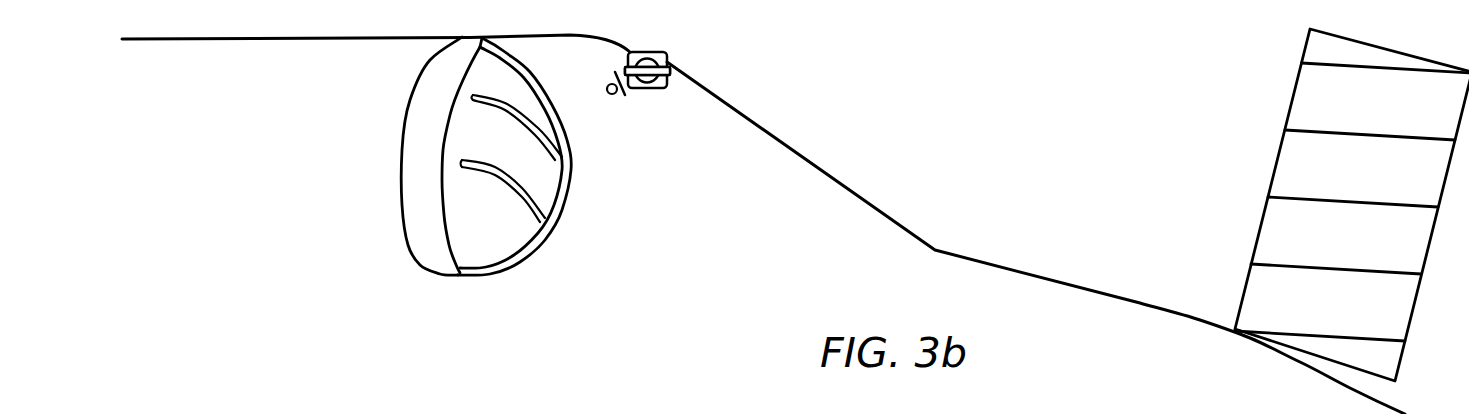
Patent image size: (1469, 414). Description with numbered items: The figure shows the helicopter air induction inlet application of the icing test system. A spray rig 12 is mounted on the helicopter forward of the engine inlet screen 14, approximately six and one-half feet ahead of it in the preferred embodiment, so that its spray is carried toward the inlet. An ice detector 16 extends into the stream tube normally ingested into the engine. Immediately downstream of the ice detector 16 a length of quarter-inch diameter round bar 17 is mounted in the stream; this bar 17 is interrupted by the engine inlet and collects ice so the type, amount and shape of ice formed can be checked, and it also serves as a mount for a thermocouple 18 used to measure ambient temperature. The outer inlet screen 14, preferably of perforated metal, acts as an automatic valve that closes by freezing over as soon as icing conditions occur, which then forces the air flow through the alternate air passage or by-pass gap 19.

The spray rig 12 is at (1268, 187).
The engine inlet screen 14 is at (535, 240).
The ice detector 16 is at (648, 90).
The round bar 17 is at (622, 93).
The thermocouple 18 is at (611, 94).
The by-pass gap 19 is at (433, 253).